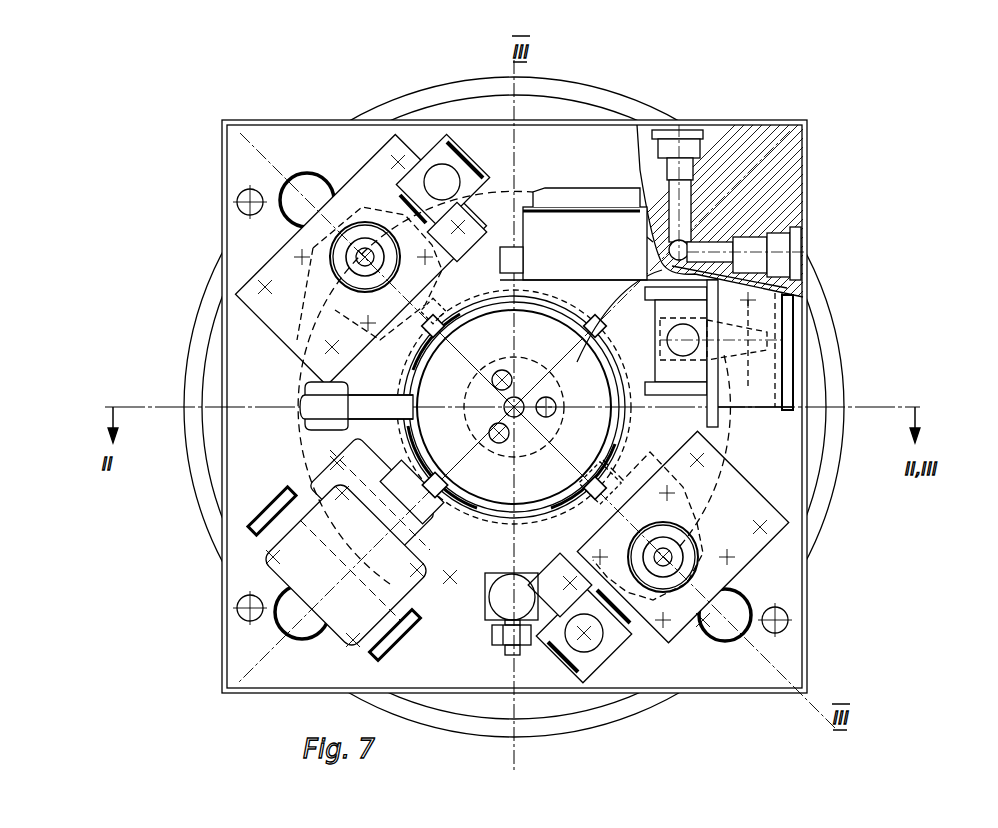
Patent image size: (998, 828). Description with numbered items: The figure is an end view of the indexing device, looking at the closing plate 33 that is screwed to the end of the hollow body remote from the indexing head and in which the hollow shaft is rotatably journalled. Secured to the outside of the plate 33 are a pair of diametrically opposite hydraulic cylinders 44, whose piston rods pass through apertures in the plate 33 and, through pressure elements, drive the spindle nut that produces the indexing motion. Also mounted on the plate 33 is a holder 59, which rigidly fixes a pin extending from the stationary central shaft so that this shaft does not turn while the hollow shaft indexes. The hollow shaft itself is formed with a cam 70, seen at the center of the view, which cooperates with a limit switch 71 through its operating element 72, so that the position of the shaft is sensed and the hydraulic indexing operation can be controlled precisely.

The closing plate 33 is at (802, 166).
The hydraulic cylinders 44 is at (325, 288).
The holder 59 is at (465, 406).
The cam 70 is at (590, 383).
The limit switch 71 is at (287, 565).
The operating element 72 is at (428, 487).